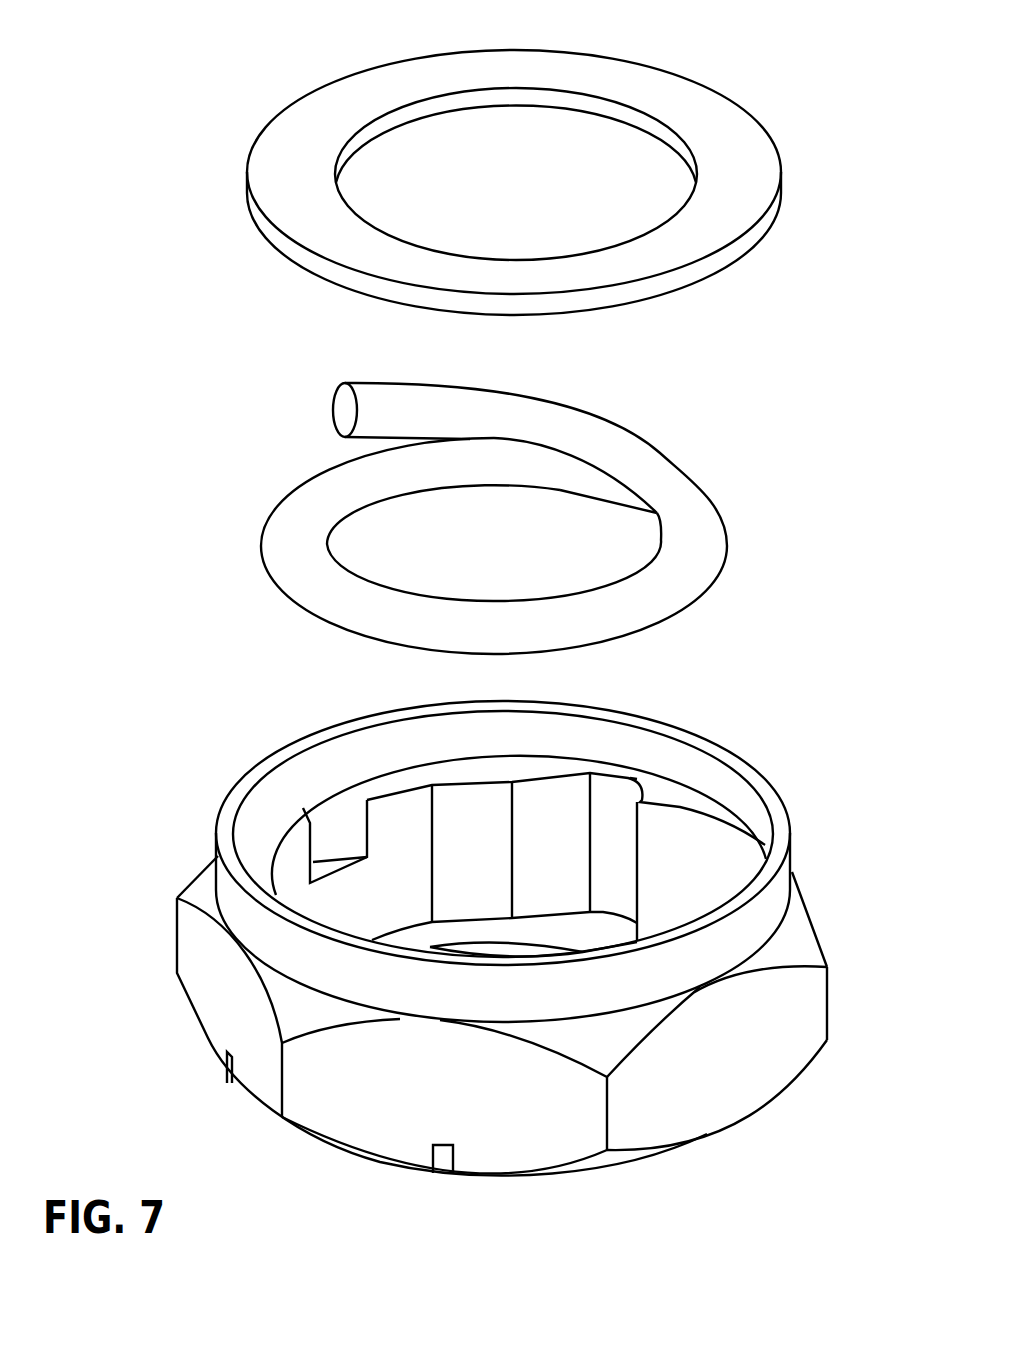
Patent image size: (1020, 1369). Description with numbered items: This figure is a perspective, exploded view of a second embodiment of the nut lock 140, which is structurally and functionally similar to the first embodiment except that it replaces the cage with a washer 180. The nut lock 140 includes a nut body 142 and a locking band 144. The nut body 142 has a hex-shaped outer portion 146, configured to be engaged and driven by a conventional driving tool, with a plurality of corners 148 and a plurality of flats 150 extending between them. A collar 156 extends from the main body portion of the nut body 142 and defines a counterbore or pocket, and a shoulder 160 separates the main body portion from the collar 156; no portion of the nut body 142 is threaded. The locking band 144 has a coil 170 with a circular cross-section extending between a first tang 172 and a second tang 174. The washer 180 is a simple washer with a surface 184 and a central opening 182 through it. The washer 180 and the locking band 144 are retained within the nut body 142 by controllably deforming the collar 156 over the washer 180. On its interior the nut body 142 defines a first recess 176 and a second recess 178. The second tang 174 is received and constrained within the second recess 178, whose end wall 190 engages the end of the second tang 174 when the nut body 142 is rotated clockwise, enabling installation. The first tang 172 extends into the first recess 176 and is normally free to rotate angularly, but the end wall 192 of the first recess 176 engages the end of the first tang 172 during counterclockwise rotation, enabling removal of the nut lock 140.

The nut lock 140 is at (115, 52).
The nut body 142 is at (176, 938).
The locking band 144 is at (260, 571).
The hex-shaped outer portion 146 is at (790, 1080).
The corners 148 is at (600, 1130).
The flats 150 is at (733, 1070).
The collar 156 is at (790, 870).
The shoulder 160 is at (415, 938).
The coil 170 is at (273, 521).
The first tang 172 is at (640, 500).
The second tang 174 is at (366, 400).
The first recess 176 is at (616, 799).
The second recess 178 is at (333, 825).
The washer 180 is at (748, 104).
The central opening 182 is at (490, 190).
The surface 184 is at (329, 103).
The end wall 190 is at (302, 810).
The end wall 192 is at (650, 790).